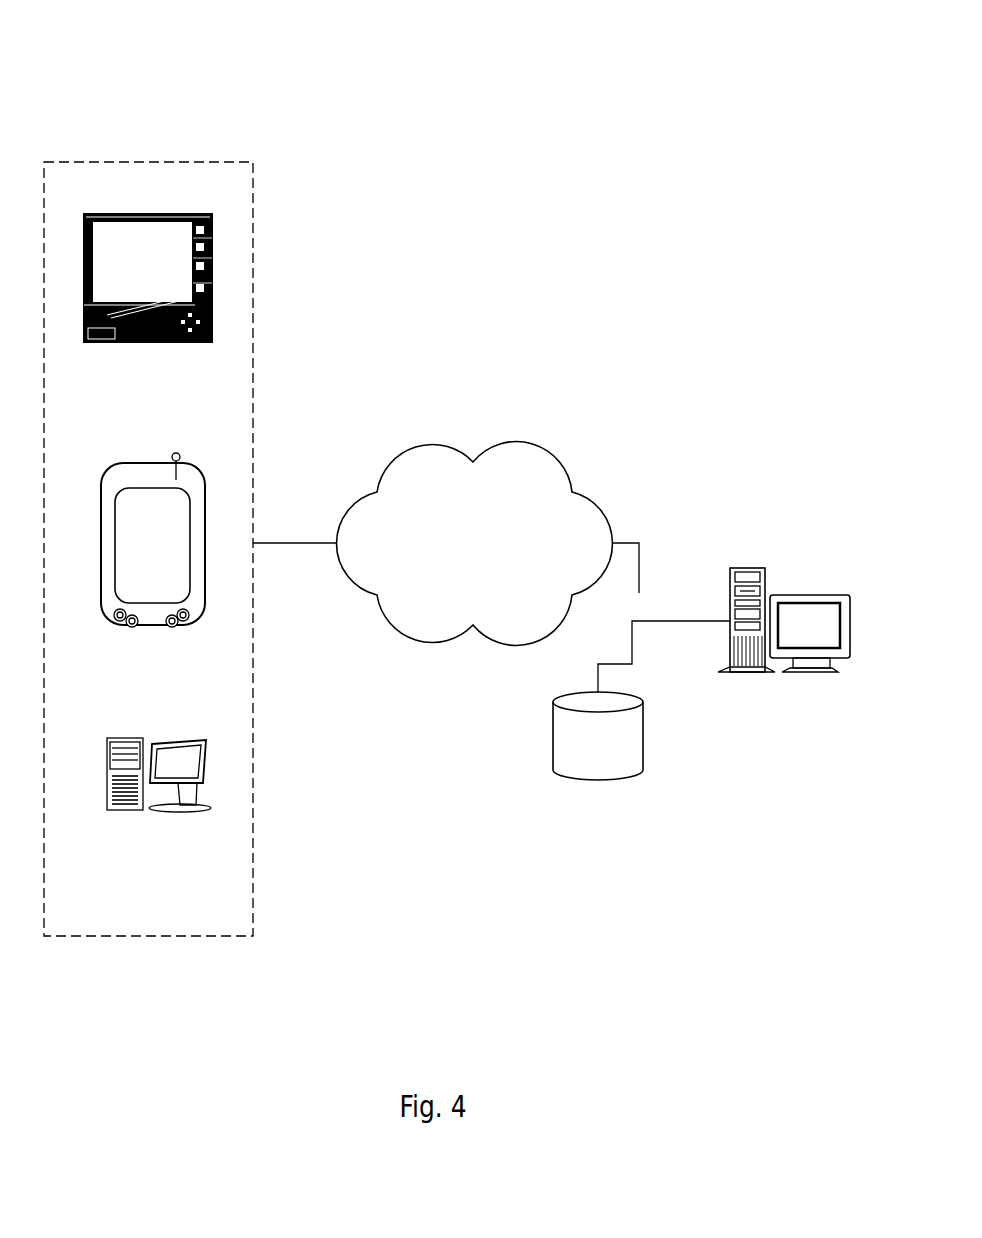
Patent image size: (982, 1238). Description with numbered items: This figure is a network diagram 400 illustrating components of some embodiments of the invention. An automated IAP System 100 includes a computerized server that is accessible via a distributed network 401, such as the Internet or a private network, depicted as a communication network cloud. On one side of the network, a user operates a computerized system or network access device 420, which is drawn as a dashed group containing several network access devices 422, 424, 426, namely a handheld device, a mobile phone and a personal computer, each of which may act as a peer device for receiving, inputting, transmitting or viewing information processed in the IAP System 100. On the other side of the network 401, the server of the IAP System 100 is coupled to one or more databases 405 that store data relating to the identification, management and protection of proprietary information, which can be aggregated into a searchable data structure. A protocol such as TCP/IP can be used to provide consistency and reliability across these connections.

The network diagram 400 is at (132, 50).
The network access device 420 is at (148, 162).
The network access device 422 is at (149, 295).
The network access device 424 is at (158, 557).
The network access device 426 is at (161, 793).
The distributed network 401 is at (475, 544).
The database 405 is at (598, 736).
The IAP System 100 is at (785, 647).